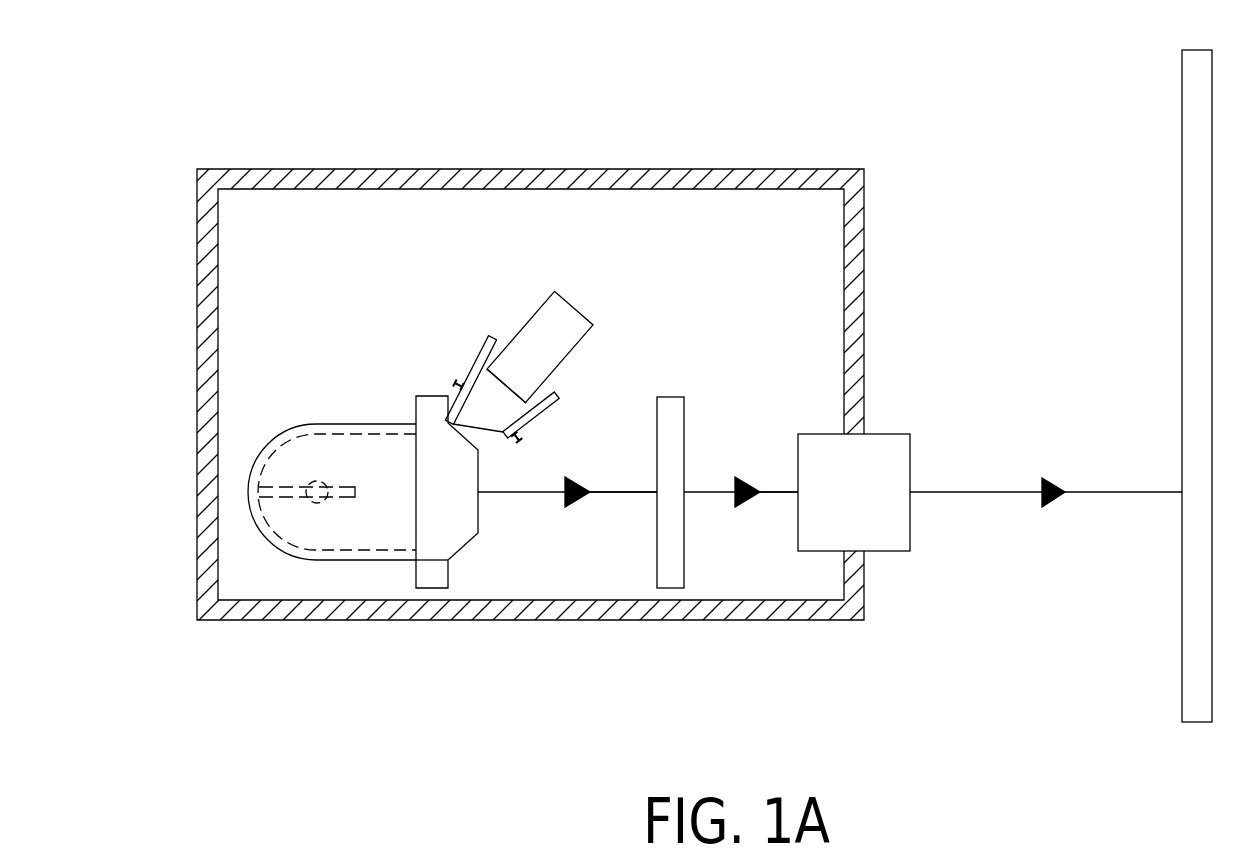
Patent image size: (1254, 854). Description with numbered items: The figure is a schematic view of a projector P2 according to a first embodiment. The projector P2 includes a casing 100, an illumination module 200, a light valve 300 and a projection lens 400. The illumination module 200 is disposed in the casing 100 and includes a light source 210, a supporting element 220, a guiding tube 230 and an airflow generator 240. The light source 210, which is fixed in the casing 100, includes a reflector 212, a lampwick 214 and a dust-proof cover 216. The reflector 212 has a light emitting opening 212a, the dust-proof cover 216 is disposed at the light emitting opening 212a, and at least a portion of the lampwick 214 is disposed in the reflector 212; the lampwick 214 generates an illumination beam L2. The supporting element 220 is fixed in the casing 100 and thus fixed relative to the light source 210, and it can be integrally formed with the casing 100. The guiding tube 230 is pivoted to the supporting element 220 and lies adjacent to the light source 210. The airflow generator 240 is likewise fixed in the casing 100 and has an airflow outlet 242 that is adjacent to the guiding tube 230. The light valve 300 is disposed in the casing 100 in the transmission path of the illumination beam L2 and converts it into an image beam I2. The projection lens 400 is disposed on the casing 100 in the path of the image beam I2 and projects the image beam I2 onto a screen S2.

The casing 100 is at (848, 169).
The illumination module 200 is at (763, 60).
The light source 210 is at (457, 112).
The reflector 212 is at (382, 423).
The light emitting opening 212a is at (410, 540).
The lampwick 214 is at (322, 483).
The dust-proof cover 216 is at (430, 412).
The supporting element 220 is at (463, 402).
The guiding tube 230 is at (558, 312).
The airflow generator 240 is at (470, 400).
The airflow outlet 242 is at (509, 402).
The light valve 300 is at (672, 582).
The projection lens 400 is at (885, 436).
The illumination beam L2 is at (607, 492).
The image beam I2 is at (773, 492).
The projector P2 is at (146, 730).
The screen S2 is at (1197, 715).